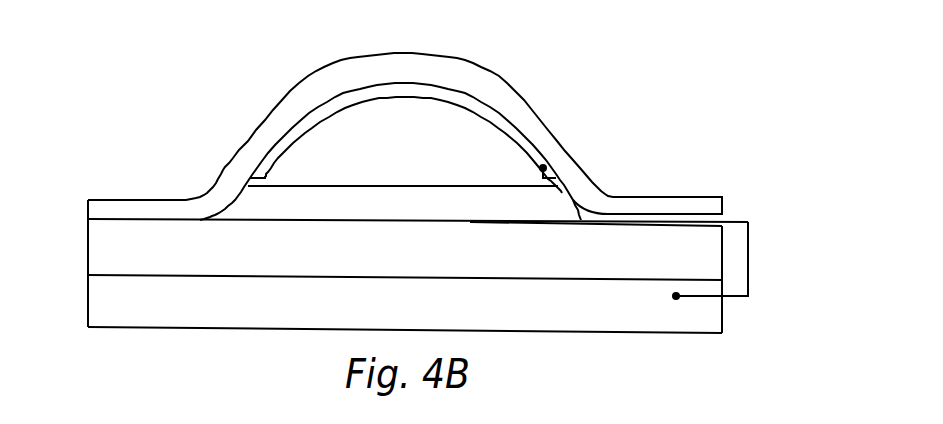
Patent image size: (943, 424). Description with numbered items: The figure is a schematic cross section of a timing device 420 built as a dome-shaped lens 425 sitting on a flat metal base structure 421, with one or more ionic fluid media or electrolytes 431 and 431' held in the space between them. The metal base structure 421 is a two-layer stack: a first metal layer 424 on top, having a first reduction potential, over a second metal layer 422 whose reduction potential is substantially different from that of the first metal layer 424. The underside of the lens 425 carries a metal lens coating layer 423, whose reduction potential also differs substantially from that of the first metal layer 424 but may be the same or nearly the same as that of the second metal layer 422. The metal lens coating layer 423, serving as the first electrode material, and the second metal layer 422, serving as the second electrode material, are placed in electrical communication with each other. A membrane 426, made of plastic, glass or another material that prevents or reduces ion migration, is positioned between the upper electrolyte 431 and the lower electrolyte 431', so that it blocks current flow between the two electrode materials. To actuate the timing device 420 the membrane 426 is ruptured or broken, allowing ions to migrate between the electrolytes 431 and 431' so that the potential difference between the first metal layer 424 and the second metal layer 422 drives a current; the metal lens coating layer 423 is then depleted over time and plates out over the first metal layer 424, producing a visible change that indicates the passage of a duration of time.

The timing device 420 is at (121, 61).
The metal base structure 421 is at (759, 220).
The second metal layer 422 is at (100, 297).
The metal lens coating layer 423 is at (302, 130).
The first metal layer 424 is at (100, 245).
The lens 425 is at (480, 92).
The membrane 426 is at (508, 186).
The ionic fluid medium 431 is at (403, 161).
The ionic fluid medium 431' is at (418, 207).